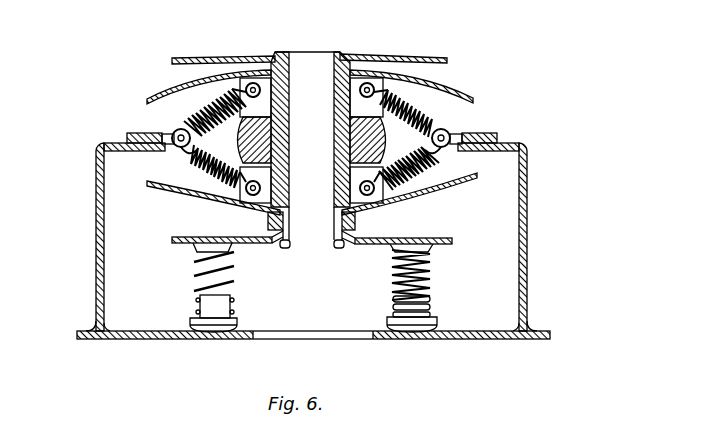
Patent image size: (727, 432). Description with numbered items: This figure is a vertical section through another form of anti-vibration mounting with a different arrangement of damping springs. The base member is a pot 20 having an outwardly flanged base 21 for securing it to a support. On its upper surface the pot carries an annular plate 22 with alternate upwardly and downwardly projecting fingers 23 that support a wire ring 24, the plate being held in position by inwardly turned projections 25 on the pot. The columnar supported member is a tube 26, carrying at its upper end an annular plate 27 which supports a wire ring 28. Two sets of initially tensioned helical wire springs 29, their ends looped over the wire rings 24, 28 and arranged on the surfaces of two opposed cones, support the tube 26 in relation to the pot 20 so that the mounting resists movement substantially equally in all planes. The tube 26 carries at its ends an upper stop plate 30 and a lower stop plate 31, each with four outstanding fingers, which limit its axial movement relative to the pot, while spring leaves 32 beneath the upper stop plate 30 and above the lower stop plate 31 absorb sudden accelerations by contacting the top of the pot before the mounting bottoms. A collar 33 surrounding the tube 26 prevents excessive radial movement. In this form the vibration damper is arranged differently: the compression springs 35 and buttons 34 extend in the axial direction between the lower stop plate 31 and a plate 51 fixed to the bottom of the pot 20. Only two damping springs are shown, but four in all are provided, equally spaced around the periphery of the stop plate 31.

The pot 20 is at (96, 190).
The outwardly flanged base 21 is at (538, 328).
The annular plate 22 is at (494, 138).
The fingers 23 is at (437, 127).
The wire ring 24 is at (434, 152).
The inwardly turned projections 25 is at (481, 131).
The tube 26 is at (335, 246).
The annular plate 27 is at (289, 53).
The wire ring 28 is at (378, 72).
The helical wire springs 29 is at (214, 96).
The upper stop plate 30 is at (172, 59).
The lower stop plate 31 is at (268, 246).
The spring leaves 32 is at (163, 92).
The collar 33 is at (360, 146).
The buttons 34 is at (213, 332).
The compression springs 35 is at (194, 272).
The plate 51 is at (140, 343).